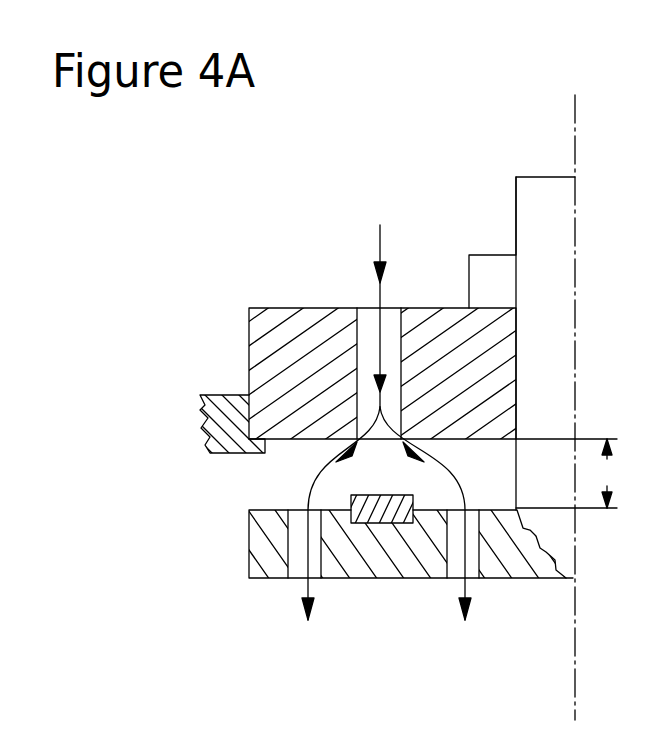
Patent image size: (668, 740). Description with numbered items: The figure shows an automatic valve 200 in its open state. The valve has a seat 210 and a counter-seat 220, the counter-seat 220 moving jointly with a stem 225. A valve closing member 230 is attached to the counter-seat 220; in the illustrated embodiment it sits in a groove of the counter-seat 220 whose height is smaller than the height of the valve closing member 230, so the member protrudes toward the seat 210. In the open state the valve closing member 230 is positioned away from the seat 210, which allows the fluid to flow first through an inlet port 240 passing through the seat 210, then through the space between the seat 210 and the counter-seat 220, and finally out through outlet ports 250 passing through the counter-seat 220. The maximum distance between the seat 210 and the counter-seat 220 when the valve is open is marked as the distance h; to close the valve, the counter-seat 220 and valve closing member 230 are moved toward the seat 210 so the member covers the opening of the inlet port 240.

The automatic valve 200 is at (297, 233).
The seat 210 is at (262, 332).
The counter-seat 220 is at (258, 550).
The stem 225 is at (537, 398).
The valve closing member 230 is at (377, 510).
The inlet port 240 is at (388, 330).
The outlet ports 250 is at (297, 568).
The maximum distance between seat and counter-seat h is at (607, 473).